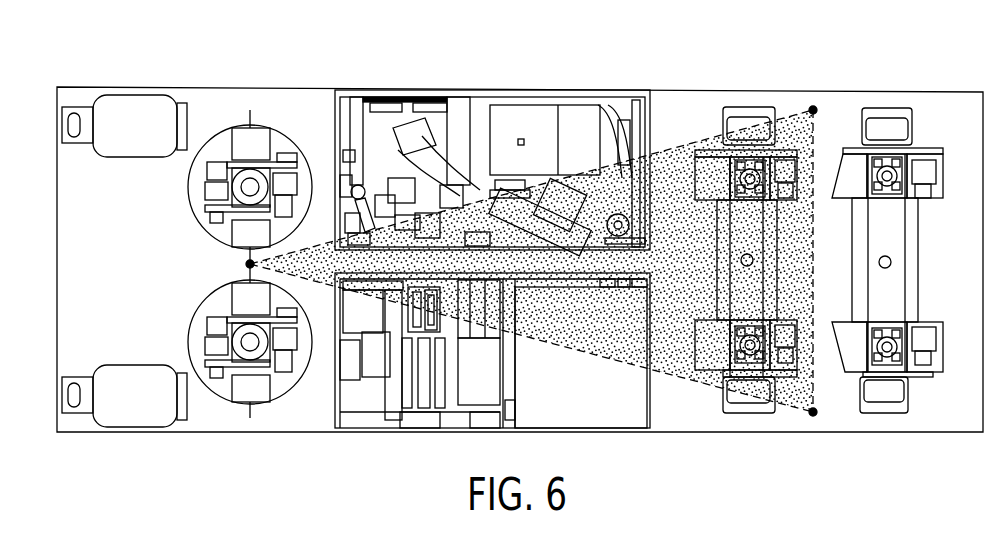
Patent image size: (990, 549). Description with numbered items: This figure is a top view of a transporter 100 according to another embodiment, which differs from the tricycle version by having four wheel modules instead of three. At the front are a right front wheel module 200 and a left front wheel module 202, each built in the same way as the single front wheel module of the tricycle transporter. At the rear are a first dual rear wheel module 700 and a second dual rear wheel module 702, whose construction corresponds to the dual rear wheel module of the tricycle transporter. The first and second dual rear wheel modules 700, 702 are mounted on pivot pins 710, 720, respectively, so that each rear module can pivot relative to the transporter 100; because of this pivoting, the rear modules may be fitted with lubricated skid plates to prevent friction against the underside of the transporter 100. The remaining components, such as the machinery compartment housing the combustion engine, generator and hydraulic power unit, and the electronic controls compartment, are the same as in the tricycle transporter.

The transporter 100 is at (448, 72).
The right front wheel module 200 is at (232, 403).
The left front wheel module 202 is at (260, 124).
The first dual rear wheel module 700 is at (720, 243).
The second dual rear wheel module 702 is at (853, 260).
The pivot pin 710 is at (754, 261).
The pivot pin 720 is at (892, 262).